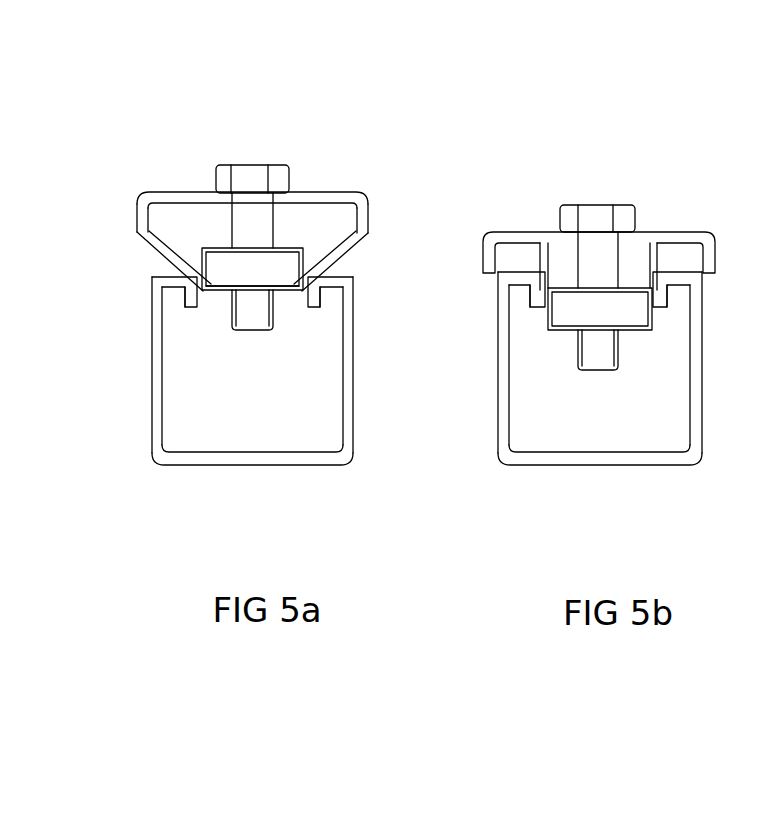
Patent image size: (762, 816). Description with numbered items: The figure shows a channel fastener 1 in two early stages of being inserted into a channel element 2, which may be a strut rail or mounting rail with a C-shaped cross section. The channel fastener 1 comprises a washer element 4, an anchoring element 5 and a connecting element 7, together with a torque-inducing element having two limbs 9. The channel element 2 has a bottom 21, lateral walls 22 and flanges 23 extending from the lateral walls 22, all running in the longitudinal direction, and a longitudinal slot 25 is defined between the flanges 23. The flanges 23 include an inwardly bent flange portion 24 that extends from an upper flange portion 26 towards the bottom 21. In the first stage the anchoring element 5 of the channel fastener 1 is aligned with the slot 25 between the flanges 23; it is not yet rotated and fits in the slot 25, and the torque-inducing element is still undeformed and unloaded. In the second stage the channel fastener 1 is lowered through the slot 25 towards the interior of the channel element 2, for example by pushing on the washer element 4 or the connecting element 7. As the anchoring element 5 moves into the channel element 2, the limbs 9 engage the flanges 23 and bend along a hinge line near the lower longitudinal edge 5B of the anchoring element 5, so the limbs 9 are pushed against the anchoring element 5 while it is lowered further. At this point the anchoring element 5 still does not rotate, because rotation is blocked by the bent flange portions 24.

In FIG. 5A, the channel fastener 1 is at (329, 108).
In FIG. 5B, the channel fastener 1 is at (638, 136).
In FIG. 5A, the channel element 2 is at (298, 474).
In FIG. 5B, the channel element 2 is at (645, 473).
In FIG. 5A, the washer element 4 is at (146, 184).
In FIG. 5B, the washer element 4 is at (542, 235).
In FIG. 5A, the anchoring element 5 is at (257, 267).
In FIG. 5B, the anchoring element 5 is at (597, 310).
In FIG. 5A, the lower longitudinal edge 5B is at (207, 290).
In FIG. 5A, the connecting element 7 is at (212, 178).
In FIG. 5B, the connecting element 7 is at (556, 217).
In FIG. 5A, the limbs 9 is at (137, 230).
In FIG. 5B, the limbs 9 is at (656, 260).
In FIG. 5A, the bottom 21 is at (203, 466).
In FIG. 5B, the bottom 21 is at (548, 466).
In FIG. 5A, the lateral walls 22 is at (152, 387).
In FIG. 5B, the lateral walls 22 is at (498, 408).
In FIG. 5A, the flanges 23 is at (157, 278).
In FIG. 5B, the flanges 23 is at (520, 277).
In FIG. 5A, the inwardly bent flange portion 24 is at (314, 292).
In FIG. 5B, the inwardly bent flange portion 24 is at (666, 294).
In FIG. 5A, the longitudinal slot 25 is at (288, 302).
In FIG. 5A, the upper flange portion 26 is at (180, 272).